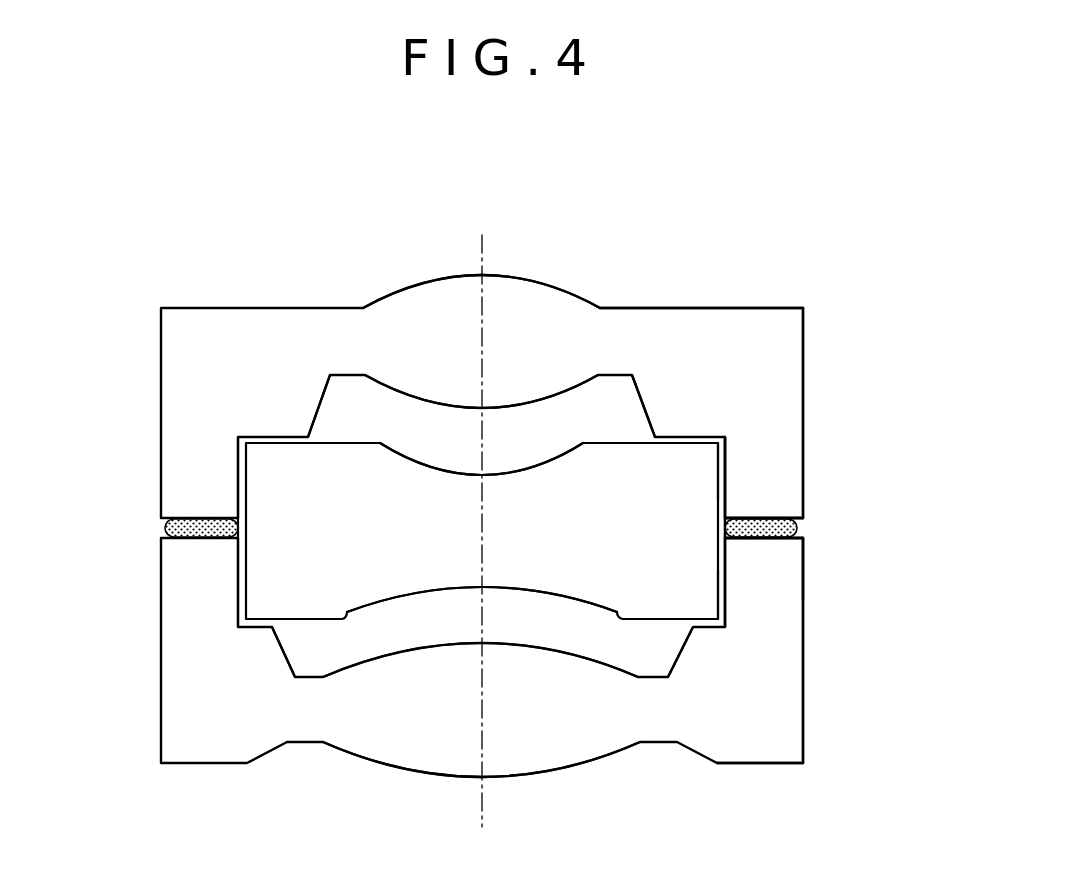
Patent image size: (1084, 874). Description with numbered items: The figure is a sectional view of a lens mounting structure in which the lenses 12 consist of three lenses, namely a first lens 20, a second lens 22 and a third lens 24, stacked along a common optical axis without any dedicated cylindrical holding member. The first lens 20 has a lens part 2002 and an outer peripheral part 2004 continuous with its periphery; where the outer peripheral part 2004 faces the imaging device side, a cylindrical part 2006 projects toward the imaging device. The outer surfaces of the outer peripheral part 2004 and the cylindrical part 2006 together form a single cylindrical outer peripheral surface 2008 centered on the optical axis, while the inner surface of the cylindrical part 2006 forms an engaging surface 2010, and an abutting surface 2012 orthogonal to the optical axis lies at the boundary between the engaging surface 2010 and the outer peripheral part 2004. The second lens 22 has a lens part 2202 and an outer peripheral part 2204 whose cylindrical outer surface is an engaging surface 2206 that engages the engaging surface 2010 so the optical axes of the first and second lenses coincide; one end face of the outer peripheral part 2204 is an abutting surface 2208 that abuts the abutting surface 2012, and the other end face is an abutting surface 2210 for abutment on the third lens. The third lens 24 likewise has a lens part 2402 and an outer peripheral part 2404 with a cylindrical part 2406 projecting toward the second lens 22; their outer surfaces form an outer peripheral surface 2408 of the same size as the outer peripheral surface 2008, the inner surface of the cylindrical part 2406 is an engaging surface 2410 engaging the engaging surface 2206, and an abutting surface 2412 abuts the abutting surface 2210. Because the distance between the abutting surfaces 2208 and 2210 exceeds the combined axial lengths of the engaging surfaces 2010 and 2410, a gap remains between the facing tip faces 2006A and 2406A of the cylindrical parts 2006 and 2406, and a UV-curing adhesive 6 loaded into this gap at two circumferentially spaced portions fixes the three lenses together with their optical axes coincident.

The lenses 12 is at (692, 200).
The first lens 20 is at (146, 329).
The second lens 22 is at (243, 458).
The third lens 24 is at (158, 643).
The adhesive 6 is at (165, 527).
The lens part 2002 is at (563, 306).
The outer peripheral part 2004 is at (748, 328).
The cylindrical part 2006 is at (780, 438).
The tip face 2006A is at (740, 525).
The outer peripheral surface 2008 is at (803, 340).
The engaging surface 2010 is at (707, 438).
The abutting surface 2012 is at (685, 440).
The lens part 2202 is at (525, 500).
The outer peripheral part 2204 is at (622, 470).
The engaging surface 2206 is at (722, 493).
The abutting surface 2208 is at (671, 443).
The abutting surface 2210 is at (660, 620).
The lens part 2402 is at (587, 742).
The outer peripheral part 2404 is at (777, 735).
The cylindrical part 2406 is at (768, 590).
The tip face 2406A is at (741, 537).
The outer peripheral surface 2408 is at (803, 625).
The engaging surface 2410 is at (725, 587).
The abutting surface 2412 is at (697, 620).